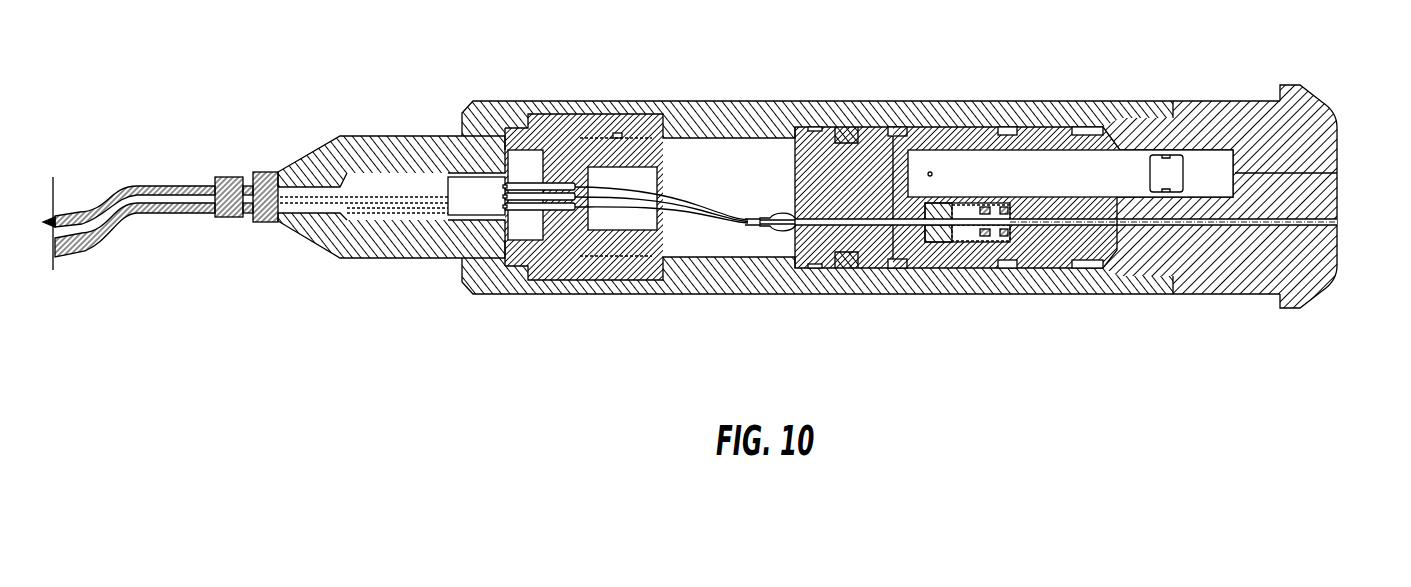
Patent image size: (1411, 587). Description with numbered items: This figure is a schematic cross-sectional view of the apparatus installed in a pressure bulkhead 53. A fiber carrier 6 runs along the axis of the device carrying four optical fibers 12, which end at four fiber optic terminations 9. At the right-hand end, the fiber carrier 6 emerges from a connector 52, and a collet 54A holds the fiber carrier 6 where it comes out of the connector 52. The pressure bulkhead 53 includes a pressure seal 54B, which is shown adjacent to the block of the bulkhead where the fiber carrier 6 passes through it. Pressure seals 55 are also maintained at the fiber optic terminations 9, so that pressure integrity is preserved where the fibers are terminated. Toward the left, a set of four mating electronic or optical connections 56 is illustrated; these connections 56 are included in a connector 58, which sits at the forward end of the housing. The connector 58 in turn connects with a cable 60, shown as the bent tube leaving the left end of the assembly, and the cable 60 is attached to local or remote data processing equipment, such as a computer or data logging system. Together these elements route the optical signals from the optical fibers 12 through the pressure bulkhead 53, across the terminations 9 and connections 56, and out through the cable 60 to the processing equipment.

The fiber carrier 6 is at (1117, 218).
The fiber optic terminations 9 is at (552, 186).
The optical fibers 12 is at (691, 208).
The connector 52 is at (1324, 97).
The pressure bulkhead 53 is at (868, 157).
The collet 54A is at (967, 233).
The pressure seal 54B is at (785, 233).
The pressure seals 55 is at (607, 232).
The mating electronic or optical connections 56 is at (527, 158).
The connector 58 is at (408, 146).
The cable 60 is at (112, 240).